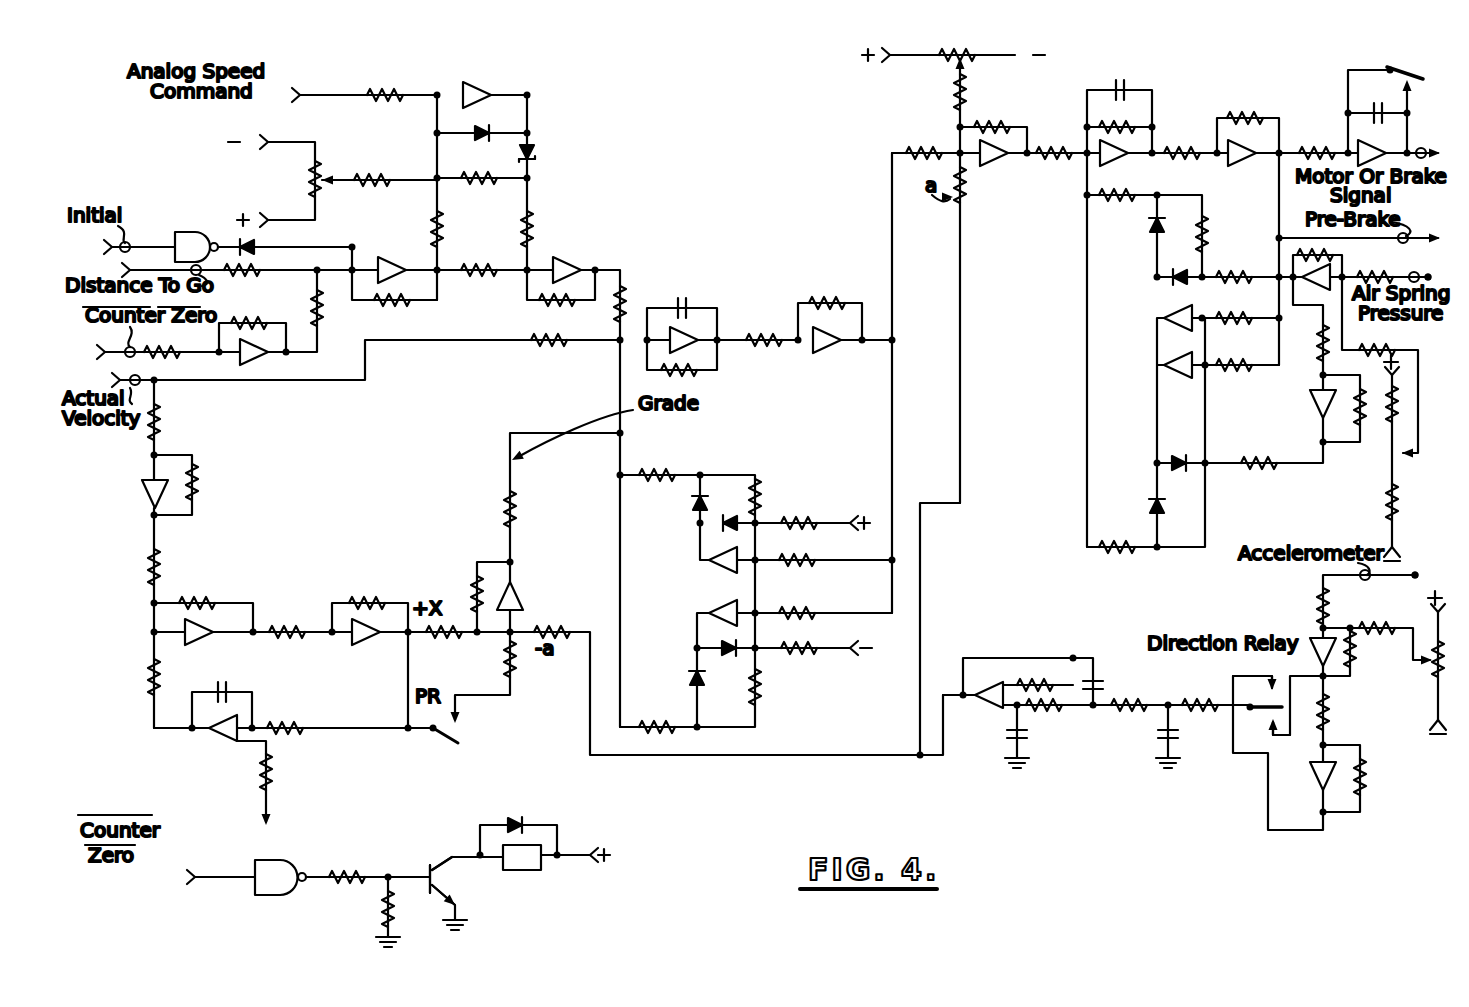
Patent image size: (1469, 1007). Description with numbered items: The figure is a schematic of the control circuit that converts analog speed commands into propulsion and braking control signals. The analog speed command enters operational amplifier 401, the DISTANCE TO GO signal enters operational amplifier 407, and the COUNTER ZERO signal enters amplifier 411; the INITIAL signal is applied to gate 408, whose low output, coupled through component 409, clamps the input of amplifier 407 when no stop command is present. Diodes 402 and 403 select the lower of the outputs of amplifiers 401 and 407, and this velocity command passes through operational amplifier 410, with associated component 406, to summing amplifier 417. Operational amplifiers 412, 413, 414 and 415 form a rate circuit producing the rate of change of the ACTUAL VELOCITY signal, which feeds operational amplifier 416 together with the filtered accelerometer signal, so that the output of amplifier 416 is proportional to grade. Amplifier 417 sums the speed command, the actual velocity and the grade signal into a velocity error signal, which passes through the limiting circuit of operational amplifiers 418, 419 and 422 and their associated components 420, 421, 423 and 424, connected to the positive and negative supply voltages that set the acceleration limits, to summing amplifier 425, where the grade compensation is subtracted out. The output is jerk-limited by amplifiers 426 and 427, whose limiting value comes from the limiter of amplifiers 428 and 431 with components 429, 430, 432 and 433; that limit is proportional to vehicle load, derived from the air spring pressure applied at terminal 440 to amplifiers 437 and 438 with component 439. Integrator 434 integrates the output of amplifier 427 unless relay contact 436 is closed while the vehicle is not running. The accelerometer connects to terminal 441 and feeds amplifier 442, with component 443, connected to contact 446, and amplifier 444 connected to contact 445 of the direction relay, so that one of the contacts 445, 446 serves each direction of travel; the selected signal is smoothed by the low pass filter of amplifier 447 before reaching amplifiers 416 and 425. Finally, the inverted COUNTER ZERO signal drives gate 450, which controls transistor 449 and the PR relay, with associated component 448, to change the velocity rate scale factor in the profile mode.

The operational amplifier 401 is at (480, 85).
The diode 402 is at (477, 134).
The diode 403 is at (533, 153).
The potentiometer 406 is at (392, 178).
The operational amplifier 407 is at (396, 248).
The gate 408 is at (196, 247).
The diode 409 is at (258, 244).
The operational amplifier 410 is at (569, 258).
The amplifier 411 is at (262, 358).
The operational amplifier 412 is at (141, 488).
The operational amplifier 413 is at (198, 640).
The operational amplifier 414 is at (376, 643).
The operational amplifier 415 is at (222, 742).
The operational amplifier 416 is at (524, 604).
The operational amplifier 417 is at (700, 334).
The operational amplifier 418 is at (822, 358).
The operational amplifier 419 is at (722, 566).
The zener diode 420 is at (692, 498).
The diode 421 is at (718, 526).
The operational amplifier 422 is at (755, 598).
The diode 423 is at (729, 656).
The zener diode 424 is at (690, 682).
The operational amplifier 425 is at (992, 163).
The operational amplifier 426 is at (1126, 162).
The operational amplifier 427 is at (1234, 166).
The operational amplifier 428 is at (1168, 320).
The zener diode 429 is at (1151, 222).
The diode 430 is at (1170, 273).
The operational amplifier 431 is at (1180, 362).
The diode 432 is at (1175, 460).
The zener diode 433 is at (1150, 508).
The operational amplifier 434 is at (1392, 152).
The relay contact 436 is at (1416, 68).
The operational amplifier 437 is at (1338, 272).
The operational amplifier 438 is at (1312, 404).
The potentiometer 439 is at (1388, 458).
The terminal 440 is at (1428, 276).
The terminal 441 is at (1412, 578).
The amplifier 442 is at (1312, 642).
The potentiometer 443 is at (1432, 663).
The amplifier 444 is at (1320, 778).
The relay contact 445 is at (1266, 687).
The relay contact 446 is at (1270, 724).
The operational amplifier 447 is at (998, 708).
The diode 448 is at (526, 824).
The transistor 449 is at (430, 872).
The gate 450 is at (279, 872).